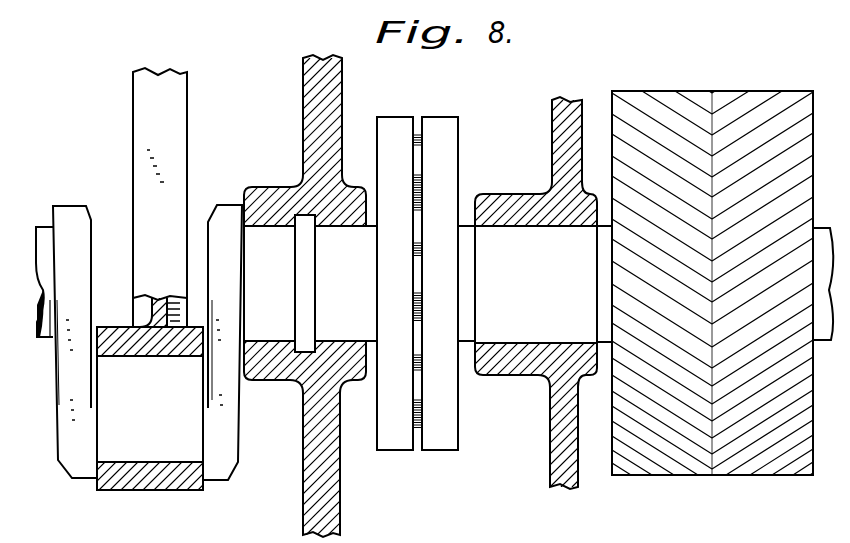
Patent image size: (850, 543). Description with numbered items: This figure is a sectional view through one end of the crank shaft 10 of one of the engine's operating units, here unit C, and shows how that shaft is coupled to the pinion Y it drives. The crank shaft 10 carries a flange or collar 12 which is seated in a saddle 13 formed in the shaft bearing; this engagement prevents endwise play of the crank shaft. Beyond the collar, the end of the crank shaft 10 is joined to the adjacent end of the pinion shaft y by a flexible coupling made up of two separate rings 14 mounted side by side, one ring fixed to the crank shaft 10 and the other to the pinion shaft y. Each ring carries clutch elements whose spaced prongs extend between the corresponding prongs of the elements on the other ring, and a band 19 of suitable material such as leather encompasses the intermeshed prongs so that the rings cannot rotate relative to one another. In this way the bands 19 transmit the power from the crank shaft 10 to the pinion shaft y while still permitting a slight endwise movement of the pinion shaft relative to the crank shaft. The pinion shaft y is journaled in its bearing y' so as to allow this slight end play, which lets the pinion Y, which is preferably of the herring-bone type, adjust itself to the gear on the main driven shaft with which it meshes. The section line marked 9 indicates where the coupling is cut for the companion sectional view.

The section line 9- 9 is at (424, 96).
The crank shaft 10 is at (469, 284).
The flange or collar 12 is at (302, 236).
The saddle 13 is at (302, 357).
The ring 14 is at (386, 128).
The band 19 is at (419, 170).
The operating unit C is at (150, 420).
The pinion Y is at (670, 90).
The pinion shaft y is at (582, 284).
The bearing y' is at (536, 293).